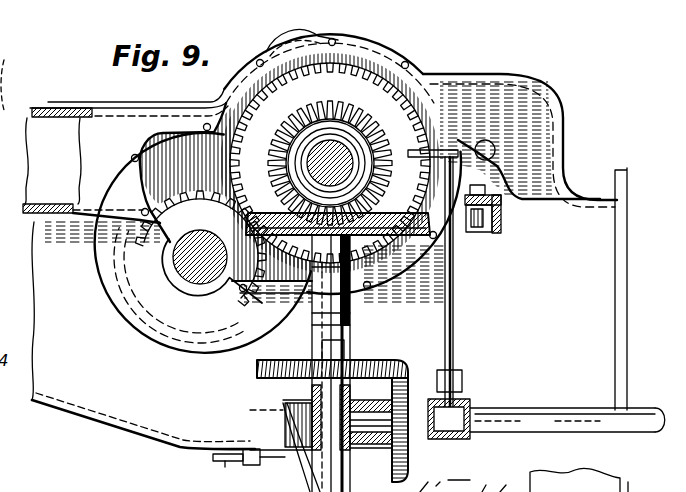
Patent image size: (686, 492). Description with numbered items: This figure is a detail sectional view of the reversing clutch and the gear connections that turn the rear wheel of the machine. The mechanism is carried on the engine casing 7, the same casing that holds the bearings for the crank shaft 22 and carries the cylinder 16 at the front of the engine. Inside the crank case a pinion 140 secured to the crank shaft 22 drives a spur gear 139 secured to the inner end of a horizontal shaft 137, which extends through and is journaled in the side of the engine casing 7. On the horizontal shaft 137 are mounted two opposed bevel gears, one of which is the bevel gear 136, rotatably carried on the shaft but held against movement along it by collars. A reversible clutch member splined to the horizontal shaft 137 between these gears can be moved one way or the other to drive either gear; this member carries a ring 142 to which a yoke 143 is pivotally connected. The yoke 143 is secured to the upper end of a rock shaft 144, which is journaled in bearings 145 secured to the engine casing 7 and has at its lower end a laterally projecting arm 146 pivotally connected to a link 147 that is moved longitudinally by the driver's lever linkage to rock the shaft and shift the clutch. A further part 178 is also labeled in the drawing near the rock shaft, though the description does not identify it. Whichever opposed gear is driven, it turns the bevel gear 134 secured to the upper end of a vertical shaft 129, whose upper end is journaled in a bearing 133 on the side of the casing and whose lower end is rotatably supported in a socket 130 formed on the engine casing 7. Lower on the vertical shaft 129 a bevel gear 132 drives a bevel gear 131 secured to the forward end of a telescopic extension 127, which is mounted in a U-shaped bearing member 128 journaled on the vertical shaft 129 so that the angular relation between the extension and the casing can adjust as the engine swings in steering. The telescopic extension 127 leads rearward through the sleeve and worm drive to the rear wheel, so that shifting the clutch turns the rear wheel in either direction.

The engine casing 7 is at (172, 102).
The cylinder 16 is at (441, 425).
The crank shaft 22 is at (183, 266).
The telescopic extension 127 is at (540, 433).
The U-shaped bearing member 128 is at (470, 437).
The vertical shaft 129 is at (330, 395).
The socket 130 is at (298, 452).
The bevel gear 131 is at (420, 430).
The bevel gear 132 is at (292, 358).
The bearing 133 is at (322, 297).
The bevel gear 134 is at (268, 212).
The bevel gear 136 is at (298, 118).
The horizontal shaft 137 is at (296, 138).
The spur gear 139 is at (376, 56).
The pinion 140 is at (190, 267).
The ring 142 is at (300, 150).
The yoke 143 is at (408, 158).
The rock shaft 144 is at (454, 282).
The bearing 145 is at (494, 153).
The laterally projecting arm 146 is at (378, 450).
The link 147 is at (218, 463).
The bracket 178 is at (499, 218).